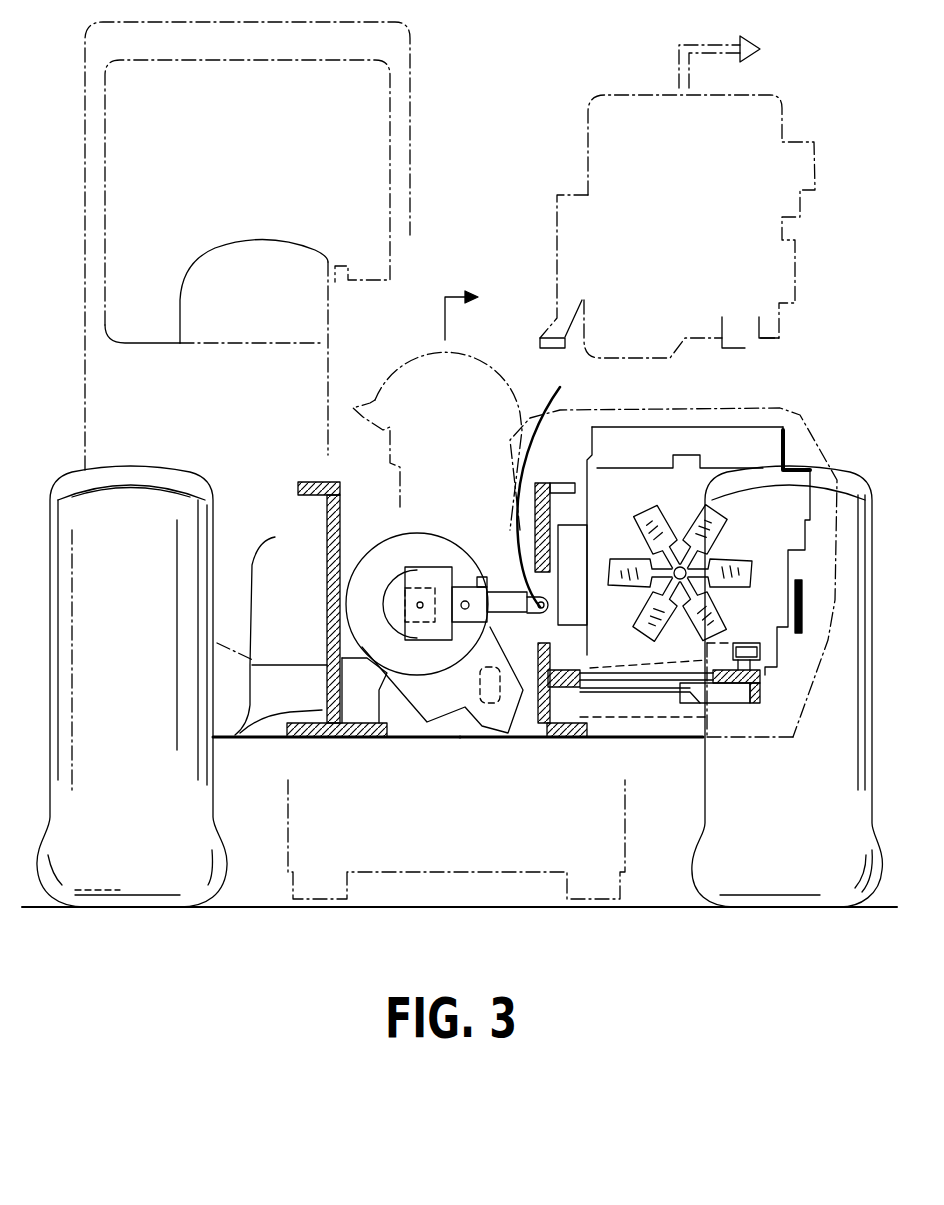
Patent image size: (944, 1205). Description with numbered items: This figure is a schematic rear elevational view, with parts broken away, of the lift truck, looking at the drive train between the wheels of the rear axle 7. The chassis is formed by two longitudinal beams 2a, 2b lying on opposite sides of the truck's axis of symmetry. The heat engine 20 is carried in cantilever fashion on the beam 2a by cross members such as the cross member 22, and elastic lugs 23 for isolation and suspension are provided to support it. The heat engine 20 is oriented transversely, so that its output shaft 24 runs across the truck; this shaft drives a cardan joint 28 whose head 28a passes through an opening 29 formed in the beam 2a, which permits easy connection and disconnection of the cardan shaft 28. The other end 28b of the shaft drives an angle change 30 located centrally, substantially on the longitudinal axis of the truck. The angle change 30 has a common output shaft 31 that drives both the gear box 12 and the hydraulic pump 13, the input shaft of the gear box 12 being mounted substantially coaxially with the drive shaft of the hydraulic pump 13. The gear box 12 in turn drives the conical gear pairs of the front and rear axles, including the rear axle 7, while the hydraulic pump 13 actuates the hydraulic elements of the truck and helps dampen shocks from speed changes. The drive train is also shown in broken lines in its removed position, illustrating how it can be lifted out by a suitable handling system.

The beam 2a is at (575, 737).
The beam 2b is at (370, 740).
The rear axle 7 is at (302, 665).
The gear box 12 is at (385, 528).
The hydraulic pump 13 is at (412, 598).
The heat engine 20 is at (801, 447).
The cross member 22 is at (733, 693).
The elastic lugs 23 is at (560, 668).
The output shaft 24 is at (543, 607).
The cardan joint 28 is at (504, 570).
The head 28a is at (556, 482).
The other end 28b is at (437, 441).
The opening 29 is at (540, 637).
The angle change 30 is at (438, 637).
The common output shaft 31 is at (420, 613).